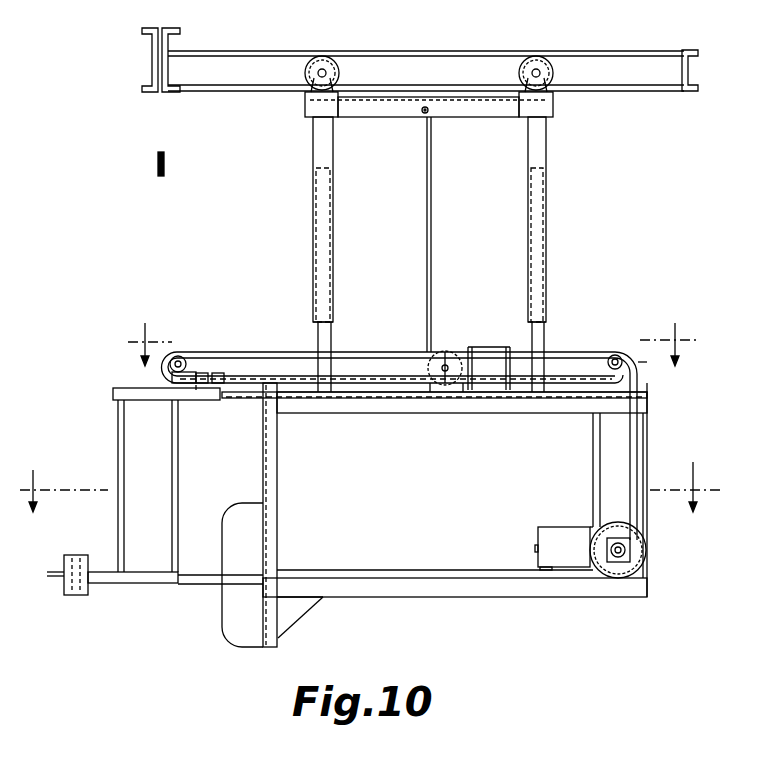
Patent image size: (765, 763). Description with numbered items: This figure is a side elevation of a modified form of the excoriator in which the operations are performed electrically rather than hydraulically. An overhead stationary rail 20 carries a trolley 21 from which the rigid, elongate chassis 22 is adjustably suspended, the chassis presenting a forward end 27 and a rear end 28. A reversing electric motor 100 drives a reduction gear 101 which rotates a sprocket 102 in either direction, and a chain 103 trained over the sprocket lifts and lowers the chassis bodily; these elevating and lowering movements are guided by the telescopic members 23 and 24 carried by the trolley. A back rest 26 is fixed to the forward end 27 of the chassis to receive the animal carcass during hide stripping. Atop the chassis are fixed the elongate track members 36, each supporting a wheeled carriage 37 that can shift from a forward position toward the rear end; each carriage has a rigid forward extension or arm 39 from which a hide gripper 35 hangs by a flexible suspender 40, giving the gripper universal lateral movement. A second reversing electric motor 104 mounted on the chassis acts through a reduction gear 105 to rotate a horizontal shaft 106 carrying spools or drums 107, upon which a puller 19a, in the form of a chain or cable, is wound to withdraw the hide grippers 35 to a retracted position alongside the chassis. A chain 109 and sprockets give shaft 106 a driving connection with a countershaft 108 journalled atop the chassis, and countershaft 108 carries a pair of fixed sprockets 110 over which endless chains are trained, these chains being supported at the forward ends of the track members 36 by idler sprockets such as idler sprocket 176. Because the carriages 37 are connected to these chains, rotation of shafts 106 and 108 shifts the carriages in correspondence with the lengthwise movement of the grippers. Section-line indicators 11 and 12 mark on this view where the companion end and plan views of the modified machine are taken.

The overhead stationary rail 20 is at (618, 87).
The trolley 21 is at (553, 107).
The telescopic tube 23 is at (333, 150).
The telescopic tube 24 is at (331, 332).
The chain 103 is at (430, 236).
The rear end 28 is at (284, 352).
The idler sprocket 176 is at (190, 356).
The track member 36 is at (247, 385).
The carriage 37 is at (226, 385).
The forward extension or arm 39 is at (141, 388).
The flexible suspender 40 is at (172, 461).
The hide grippers 35 is at (88, 590).
The forward end 27 is at (263, 462).
The back rest 26 is at (232, 612).
The floor plate 19a is at (388, 571).
The chassis 22 is at (455, 590).
The chain 109 is at (597, 455).
The reduction gear 101 is at (432, 363).
The sprocket 102 is at (450, 345).
The reversing electric motor 100 is at (476, 358).
The countershaft 108 is at (613, 352).
The fixed sprockets 110 is at (657, 357).
The second reversing electric motor 104 is at (539, 527).
The reduction gear 105 is at (590, 527).
The horizontal shaft 106 is at (625, 550).
The spools or drums 107 is at (630, 578).
The section line 12 is at (408, 329).
The section line 11 is at (367, 474).